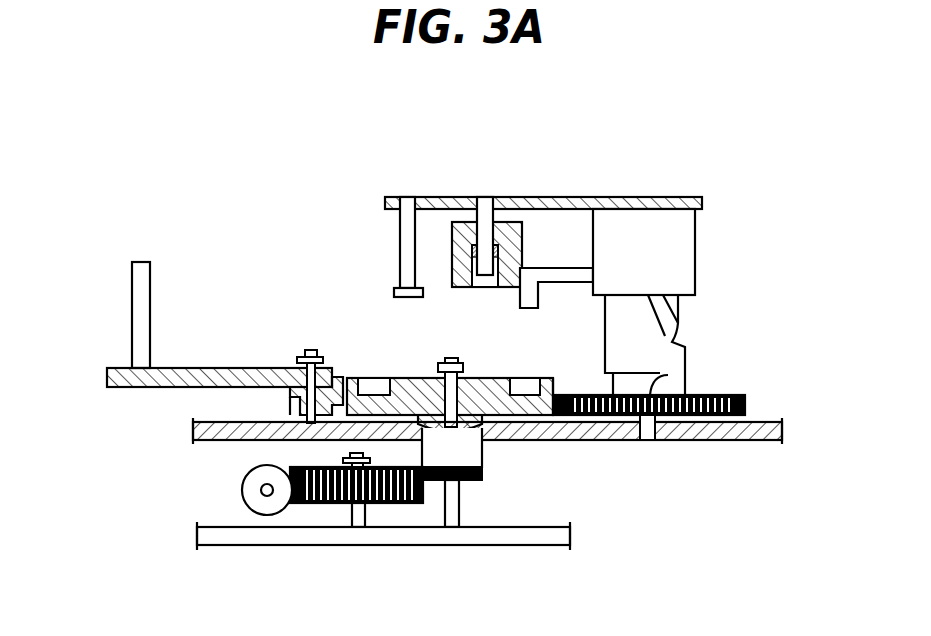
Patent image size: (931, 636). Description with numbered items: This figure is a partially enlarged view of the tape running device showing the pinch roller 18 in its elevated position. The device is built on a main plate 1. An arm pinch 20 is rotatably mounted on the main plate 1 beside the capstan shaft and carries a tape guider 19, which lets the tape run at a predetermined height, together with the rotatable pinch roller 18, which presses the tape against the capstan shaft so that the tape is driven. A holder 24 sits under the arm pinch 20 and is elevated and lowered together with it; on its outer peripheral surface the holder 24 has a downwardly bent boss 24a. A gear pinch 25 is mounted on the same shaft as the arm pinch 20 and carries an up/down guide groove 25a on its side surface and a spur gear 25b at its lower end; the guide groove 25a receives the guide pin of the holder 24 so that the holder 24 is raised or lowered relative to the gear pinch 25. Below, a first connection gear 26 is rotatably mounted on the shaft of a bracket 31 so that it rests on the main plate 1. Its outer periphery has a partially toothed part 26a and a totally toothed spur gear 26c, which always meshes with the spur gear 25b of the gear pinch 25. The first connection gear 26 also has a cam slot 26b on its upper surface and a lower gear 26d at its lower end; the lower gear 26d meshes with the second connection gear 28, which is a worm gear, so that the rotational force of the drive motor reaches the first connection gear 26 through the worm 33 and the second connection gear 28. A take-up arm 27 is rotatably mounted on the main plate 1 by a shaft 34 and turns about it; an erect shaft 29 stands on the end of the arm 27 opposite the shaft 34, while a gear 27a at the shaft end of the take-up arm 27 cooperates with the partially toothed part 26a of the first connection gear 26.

The main plate 1 is at (743, 440).
The pinch roller 18 is at (517, 197).
The tape guider 19 is at (400, 247).
The arm pinch 20 is at (640, 197).
The holder 24 is at (683, 248).
The boss 24a is at (553, 268).
The gear pinch 25 is at (812, 305).
The up/down guide groove 25a is at (672, 332).
The spur gear 25b is at (668, 372).
The first connection gear 26 is at (418, 390).
The partially toothed part 26a is at (560, 380).
The cam slot 26b is at (520, 378).
The spur gear 26c is at (570, 440).
The lower gear 26d is at (482, 470).
The take-up arm 27 is at (232, 367).
The gear 27a is at (348, 366).
The second connection gear 28 is at (383, 504).
The erect shaft 29 is at (137, 285).
The bracket 31 is at (530, 546).
The worm 33 is at (262, 516).
The shaft 34 is at (290, 397).